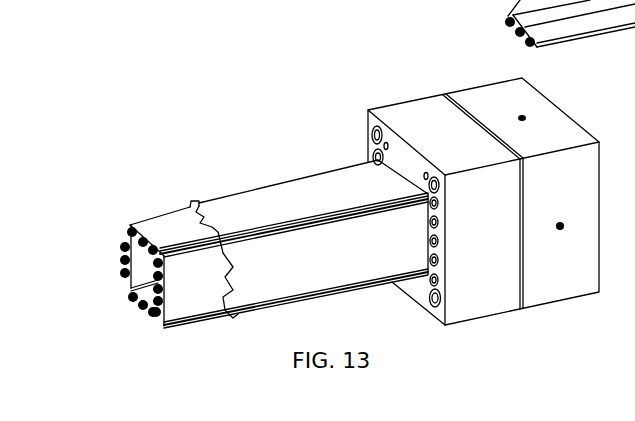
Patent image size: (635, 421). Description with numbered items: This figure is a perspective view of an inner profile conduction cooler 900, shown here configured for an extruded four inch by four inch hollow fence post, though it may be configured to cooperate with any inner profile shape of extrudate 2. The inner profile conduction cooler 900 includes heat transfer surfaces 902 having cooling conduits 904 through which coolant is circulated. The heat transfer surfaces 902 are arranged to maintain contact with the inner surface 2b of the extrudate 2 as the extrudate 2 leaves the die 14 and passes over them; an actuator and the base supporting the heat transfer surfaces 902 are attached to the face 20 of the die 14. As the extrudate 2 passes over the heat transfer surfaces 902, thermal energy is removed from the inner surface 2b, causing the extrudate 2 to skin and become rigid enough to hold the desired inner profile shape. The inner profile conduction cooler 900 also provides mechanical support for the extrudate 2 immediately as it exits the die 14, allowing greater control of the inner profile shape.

The inner profile conduction cooler 900 is at (358, 52).
The extrudate 2 is at (303, 177).
The inner surface 2b is at (213, 229).
The die 14 is at (416, 97).
The face 20 is at (410, 288).
The heat transfer surfaces 902 is at (161, 216).
The cooling conduits 904 is at (127, 228).